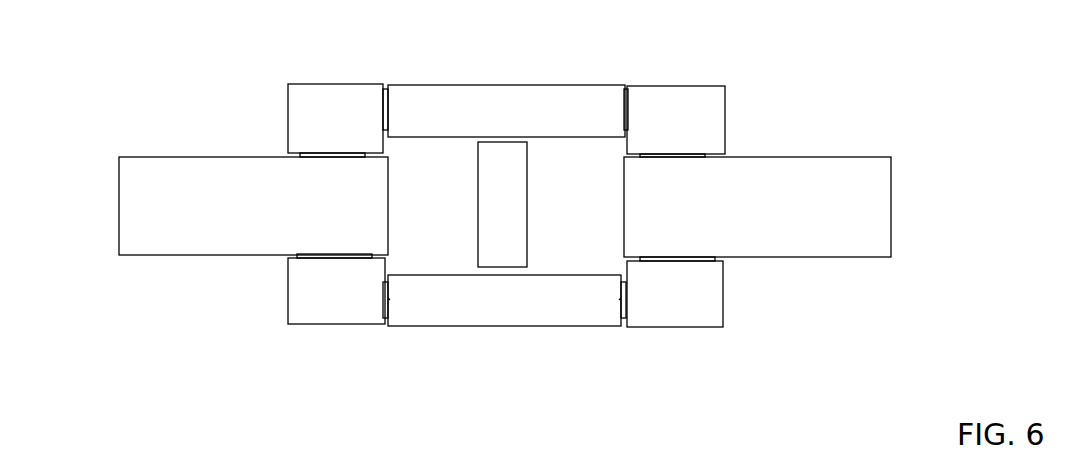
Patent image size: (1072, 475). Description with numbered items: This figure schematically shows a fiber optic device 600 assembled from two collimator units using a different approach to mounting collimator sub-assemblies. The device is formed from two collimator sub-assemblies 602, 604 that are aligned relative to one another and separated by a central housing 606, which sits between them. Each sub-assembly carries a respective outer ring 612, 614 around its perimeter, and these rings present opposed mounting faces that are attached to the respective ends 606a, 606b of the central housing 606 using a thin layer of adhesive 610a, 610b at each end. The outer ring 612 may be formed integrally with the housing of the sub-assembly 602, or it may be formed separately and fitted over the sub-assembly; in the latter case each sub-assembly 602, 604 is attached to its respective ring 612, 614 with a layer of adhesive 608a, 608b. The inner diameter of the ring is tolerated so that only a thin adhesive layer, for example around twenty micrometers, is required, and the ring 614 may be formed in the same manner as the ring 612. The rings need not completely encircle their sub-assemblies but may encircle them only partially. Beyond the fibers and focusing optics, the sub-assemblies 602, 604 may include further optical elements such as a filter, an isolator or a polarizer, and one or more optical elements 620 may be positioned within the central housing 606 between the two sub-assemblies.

The fiber optic device 600 is at (948, 98).
The collimator sub-assembly 602 is at (190, 255).
The collimator sub-assembly 604 is at (840, 258).
The central housing 606 is at (503, 327).
The end of central housing 606a is at (388, 298).
The end of central housing 606b is at (621, 298).
The layer of adhesive 608a is at (292, 256).
The layer of adhesive 608b is at (725, 260).
The layer of adhesive 610a is at (386, 88).
The layer of adhesive 610b is at (627, 88).
The outer ring 612 is at (288, 126).
The outer ring 614 is at (727, 108).
The optical element 620 is at (496, 140).